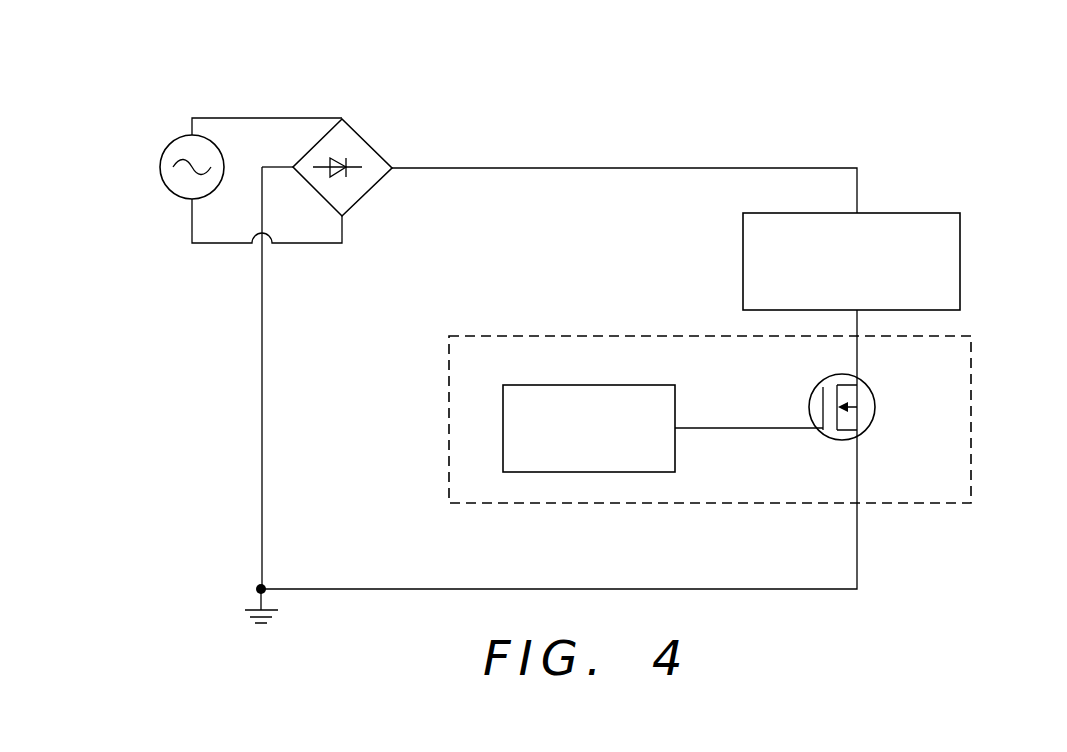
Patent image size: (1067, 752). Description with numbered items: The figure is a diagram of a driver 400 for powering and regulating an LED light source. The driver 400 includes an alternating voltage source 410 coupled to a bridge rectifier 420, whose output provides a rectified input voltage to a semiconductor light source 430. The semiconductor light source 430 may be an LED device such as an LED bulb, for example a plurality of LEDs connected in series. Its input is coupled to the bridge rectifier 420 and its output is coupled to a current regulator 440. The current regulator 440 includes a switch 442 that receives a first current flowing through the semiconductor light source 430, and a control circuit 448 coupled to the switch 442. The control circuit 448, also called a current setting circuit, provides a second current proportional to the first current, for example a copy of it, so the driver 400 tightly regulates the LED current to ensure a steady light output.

The driver 400 is at (148, 64).
The alternating voltage source 410 is at (160, 169).
The bridge rectifier 420 is at (368, 140).
The semiconductor light source 430 is at (960, 246).
The current regulator 440 is at (971, 446).
The switch 442 is at (875, 403).
The control circuit 448 is at (607, 385).